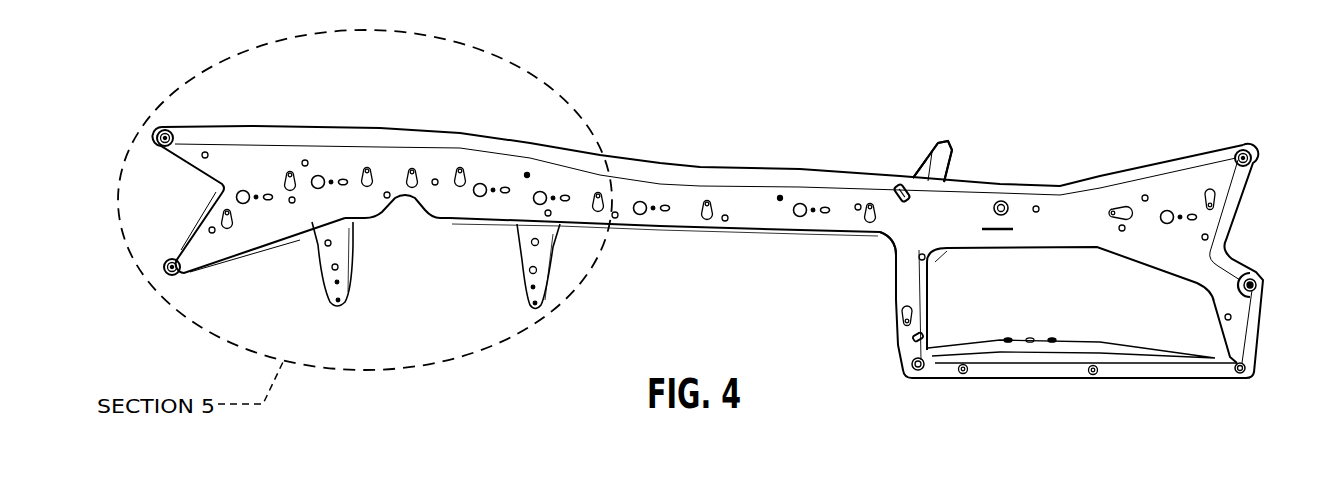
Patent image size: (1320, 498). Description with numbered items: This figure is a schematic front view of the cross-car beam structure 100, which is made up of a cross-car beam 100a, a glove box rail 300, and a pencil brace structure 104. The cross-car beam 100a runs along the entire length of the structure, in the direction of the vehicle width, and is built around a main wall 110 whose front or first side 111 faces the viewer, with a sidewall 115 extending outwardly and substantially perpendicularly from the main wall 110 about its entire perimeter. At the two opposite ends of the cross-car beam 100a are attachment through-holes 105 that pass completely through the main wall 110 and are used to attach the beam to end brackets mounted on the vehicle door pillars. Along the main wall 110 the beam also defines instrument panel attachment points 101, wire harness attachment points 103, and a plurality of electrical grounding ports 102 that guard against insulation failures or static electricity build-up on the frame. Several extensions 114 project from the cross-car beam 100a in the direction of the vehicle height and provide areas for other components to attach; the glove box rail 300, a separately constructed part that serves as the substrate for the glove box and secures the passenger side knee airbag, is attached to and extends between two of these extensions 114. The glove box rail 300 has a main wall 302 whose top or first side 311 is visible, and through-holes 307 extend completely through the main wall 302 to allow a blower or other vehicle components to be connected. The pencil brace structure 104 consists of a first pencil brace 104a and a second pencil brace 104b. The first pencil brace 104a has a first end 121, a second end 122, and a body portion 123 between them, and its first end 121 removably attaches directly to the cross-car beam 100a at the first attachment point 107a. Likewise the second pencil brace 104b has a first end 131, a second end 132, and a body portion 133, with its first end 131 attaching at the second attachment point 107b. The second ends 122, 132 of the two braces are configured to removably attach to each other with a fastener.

The cross-car beam structure 100 is at (856, 58).
The cross-car beam 100a is at (722, 232).
The instrument panel attachment points 101 is at (230, 230).
The electrical grounding ports 102 is at (319, 176).
The wire harness attachment points 103 is at (527, 174).
The pencil brace structure 104 is at (949, 127).
The first pencil brace 104a is at (932, 140).
The second pencil brace 104b is at (962, 155).
The attachment through-holes 105 is at (158, 138).
The first attachment point 107a is at (896, 206).
The second attachment point 107b is at (912, 338).
The main wall 110 is at (1200, 177).
The first side 111 is at (1100, 210).
The extensions 114 is at (352, 278).
The sidewall 115 is at (666, 170).
The first end 121 is at (895, 188).
The second end 122 is at (934, 134).
The body portion 123 is at (920, 166).
The first end 131 is at (914, 348).
The second end 132 is at (960, 140).
The body portion 133 is at (950, 172).
The glove box rail 300 is at (1047, 388).
The main wall 302 is at (1195, 368).
The through-holes 307 is at (1008, 337).
The first side 311 is at (1116, 345).